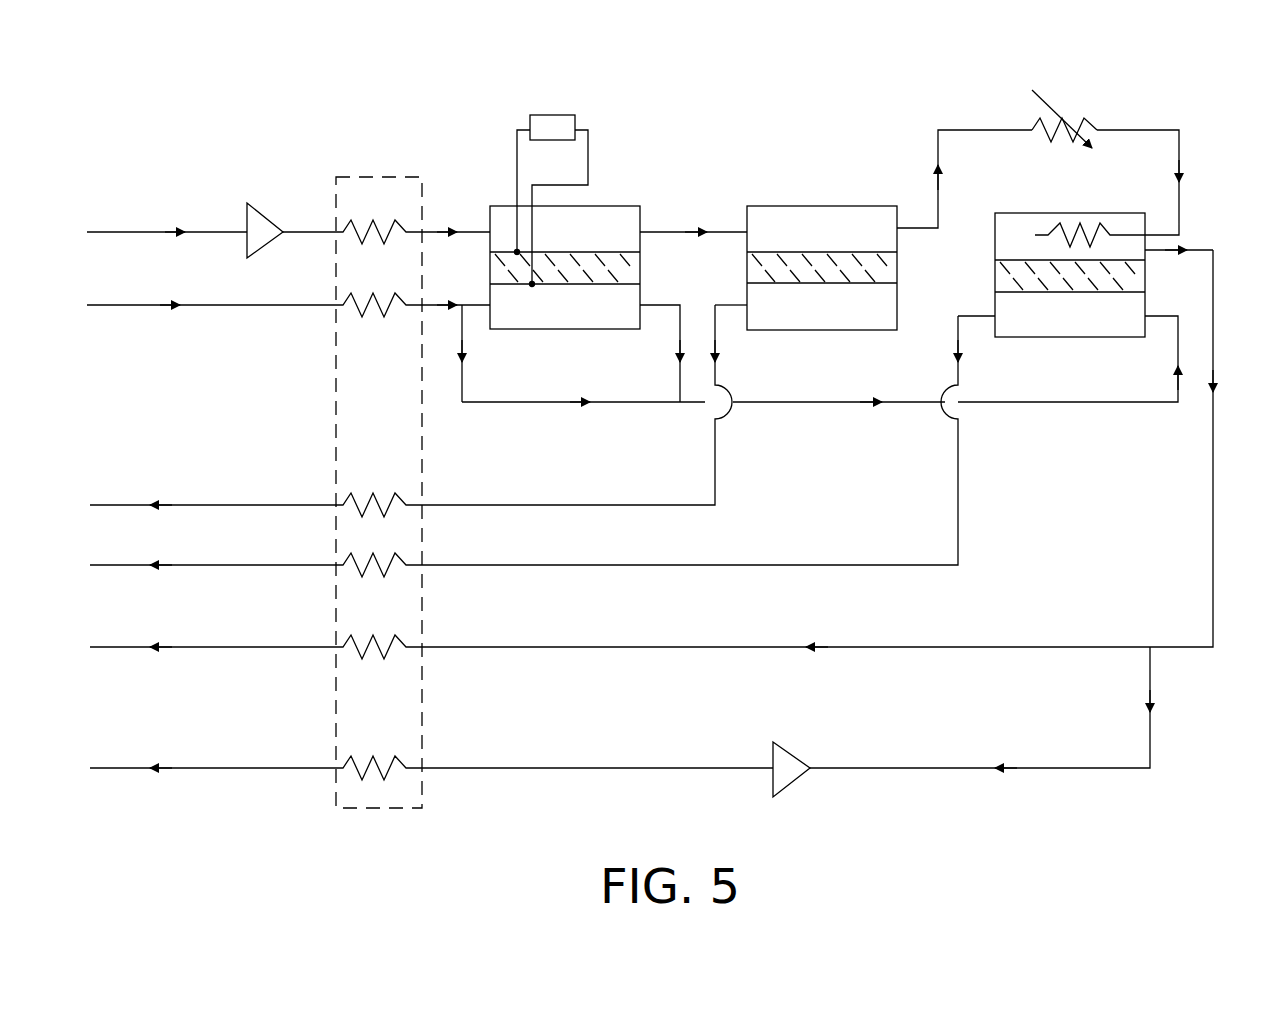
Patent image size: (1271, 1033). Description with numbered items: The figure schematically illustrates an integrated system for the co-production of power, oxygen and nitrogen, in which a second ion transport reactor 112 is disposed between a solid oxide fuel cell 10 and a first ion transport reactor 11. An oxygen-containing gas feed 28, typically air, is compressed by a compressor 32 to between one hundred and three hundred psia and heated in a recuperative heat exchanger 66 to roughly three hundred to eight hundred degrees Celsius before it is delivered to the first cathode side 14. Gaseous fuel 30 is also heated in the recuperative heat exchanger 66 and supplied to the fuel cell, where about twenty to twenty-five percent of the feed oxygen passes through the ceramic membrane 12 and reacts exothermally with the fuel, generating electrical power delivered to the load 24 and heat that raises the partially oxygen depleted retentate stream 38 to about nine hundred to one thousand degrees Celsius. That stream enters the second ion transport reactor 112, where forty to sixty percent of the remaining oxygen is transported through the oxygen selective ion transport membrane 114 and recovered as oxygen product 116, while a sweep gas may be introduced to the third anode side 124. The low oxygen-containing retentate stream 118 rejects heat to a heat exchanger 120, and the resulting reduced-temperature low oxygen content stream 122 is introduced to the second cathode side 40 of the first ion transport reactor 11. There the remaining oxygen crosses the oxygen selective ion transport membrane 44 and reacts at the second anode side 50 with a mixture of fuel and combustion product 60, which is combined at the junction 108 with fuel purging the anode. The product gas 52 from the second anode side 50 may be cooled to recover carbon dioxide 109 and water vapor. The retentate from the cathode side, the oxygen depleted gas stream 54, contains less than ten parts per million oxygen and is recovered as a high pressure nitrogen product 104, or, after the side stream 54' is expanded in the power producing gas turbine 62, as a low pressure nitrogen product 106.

The solid oxide fuel cell 10 is at (634, 184).
The first ion transport reactor 11 is at (1092, 189).
The ceramic membrane 12 is at (636, 268).
The first cathode side 14 is at (508, 251).
The load 24 is at (553, 133).
The oxygen-containing gas feed 28 is at (145, 230).
The gaseous fuel 30 is at (120, 307).
The compressor 32 is at (257, 225).
The partially oxygen depleted retentate stream 38 is at (667, 227).
The second cathode side 40 is at (1000, 270).
The oxygen selective ion transport membrane 44 is at (1110, 262).
The second anode side 50 is at (1020, 280).
The product gas 52 is at (960, 503).
The oxygen depleted gas stream 54 is at (844, 448).
The stream 54' is at (980, 707).
The mixture of fuel and combustion product 60 is at (678, 322).
The power producing gas turbine 62 is at (785, 748).
The recuperative heat exchanger 66 is at (383, 802).
The high pressure nitrogen product 104 is at (220, 650).
The low pressure nitrogen product 106 is at (210, 768).
The junction 108 is at (703, 405).
The carbon dioxide 109 is at (232, 567).
The second ion transport reactor 112 is at (843, 197).
The oxygen selective ion transport membrane 114 is at (865, 254).
The oxygen product 116 is at (222, 503).
The low oxygen-containing retentate stream 118 is at (935, 150).
The heat exchanger 120 is at (1070, 113).
The low oxygen content stream 122 is at (1181, 140).
The third anode side 124 is at (868, 284).